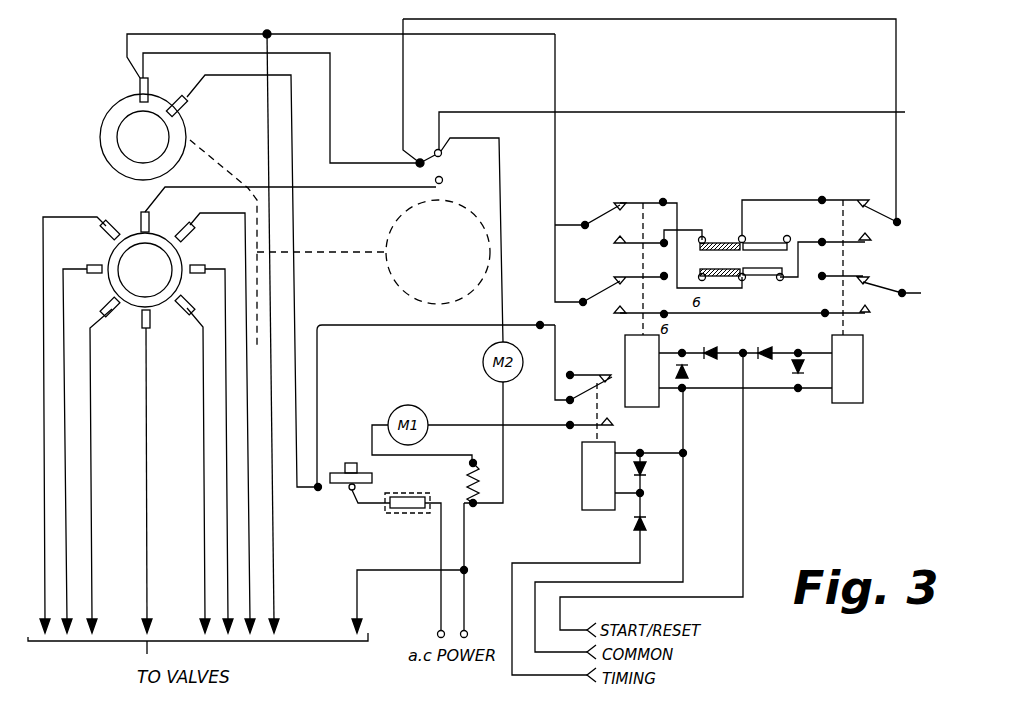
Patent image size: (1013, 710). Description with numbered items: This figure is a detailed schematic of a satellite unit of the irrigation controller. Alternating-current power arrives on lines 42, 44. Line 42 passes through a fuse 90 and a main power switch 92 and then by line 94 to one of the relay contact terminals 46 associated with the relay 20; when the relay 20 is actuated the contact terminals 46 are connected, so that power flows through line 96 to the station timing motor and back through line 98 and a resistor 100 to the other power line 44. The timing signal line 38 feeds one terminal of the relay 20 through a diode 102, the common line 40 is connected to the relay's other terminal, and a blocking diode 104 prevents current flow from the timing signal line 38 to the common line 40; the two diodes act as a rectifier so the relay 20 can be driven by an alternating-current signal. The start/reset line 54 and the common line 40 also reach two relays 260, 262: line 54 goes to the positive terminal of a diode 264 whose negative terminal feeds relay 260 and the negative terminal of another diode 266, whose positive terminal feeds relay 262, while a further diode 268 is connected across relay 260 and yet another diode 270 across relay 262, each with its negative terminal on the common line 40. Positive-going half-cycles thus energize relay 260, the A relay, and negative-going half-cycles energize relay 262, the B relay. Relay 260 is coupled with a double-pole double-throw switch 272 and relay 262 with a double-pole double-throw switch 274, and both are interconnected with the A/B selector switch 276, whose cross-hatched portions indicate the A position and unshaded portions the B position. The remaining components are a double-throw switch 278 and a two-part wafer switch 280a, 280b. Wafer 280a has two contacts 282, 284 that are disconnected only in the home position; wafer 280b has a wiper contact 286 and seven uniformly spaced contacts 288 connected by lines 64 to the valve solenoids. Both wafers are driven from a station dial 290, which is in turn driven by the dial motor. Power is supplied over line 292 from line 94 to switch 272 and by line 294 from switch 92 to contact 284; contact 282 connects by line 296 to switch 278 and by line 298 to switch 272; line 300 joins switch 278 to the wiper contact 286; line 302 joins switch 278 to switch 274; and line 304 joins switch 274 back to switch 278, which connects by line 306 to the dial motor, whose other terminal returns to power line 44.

The wafer 280a is at (119, 102).
The wafer 280b is at (104, 196).
The contact 282 is at (150, 86).
The contact 284 is at (186, 111).
The wiper contact 286 is at (160, 200).
The contacts 288 is at (96, 264).
The lines 64 is at (45, 461).
The line 298 is at (364, 36).
The line 296 is at (330, 120).
The line 300 is at (335, 190).
The line 294 is at (294, 284).
The line 292 is at (555, 225).
The line 302 is at (600, 21).
The line 304 is at (614, 112).
The line 306 is at (473, 134).
The double-throw switch 278 is at (462, 162).
The station dial 290 is at (410, 300).
The line 94 is at (403, 328).
The double-pole double-throw switch 272 is at (622, 190).
The A/B selector switch 276 is at (727, 199).
The double-pole double-throw switch 274 is at (836, 192).
The relay 260 is at (635, 408).
The relay 262 is at (843, 406).
The diode 264 is at (711, 352).
The diode 266 is at (765, 352).
The diode 268 is at (688, 372).
The diode 270 is at (792, 367).
The relay contact terminals 46 is at (572, 397).
The line 96 is at (441, 426).
The line 98 is at (387, 456).
The resistor 100 is at (478, 461).
The power switch 92 is at (333, 491).
The fuse 90 is at (392, 515).
The line 42 is at (437, 593).
The line 44 is at (467, 587).
The relay 20 is at (588, 512).
The blocking diode 104 is at (652, 467).
The diode 102 is at (650, 527).
The start/reset line 54 is at (731, 597).
The common line 40 is at (547, 638).
The timing signal line 38 is at (533, 676).